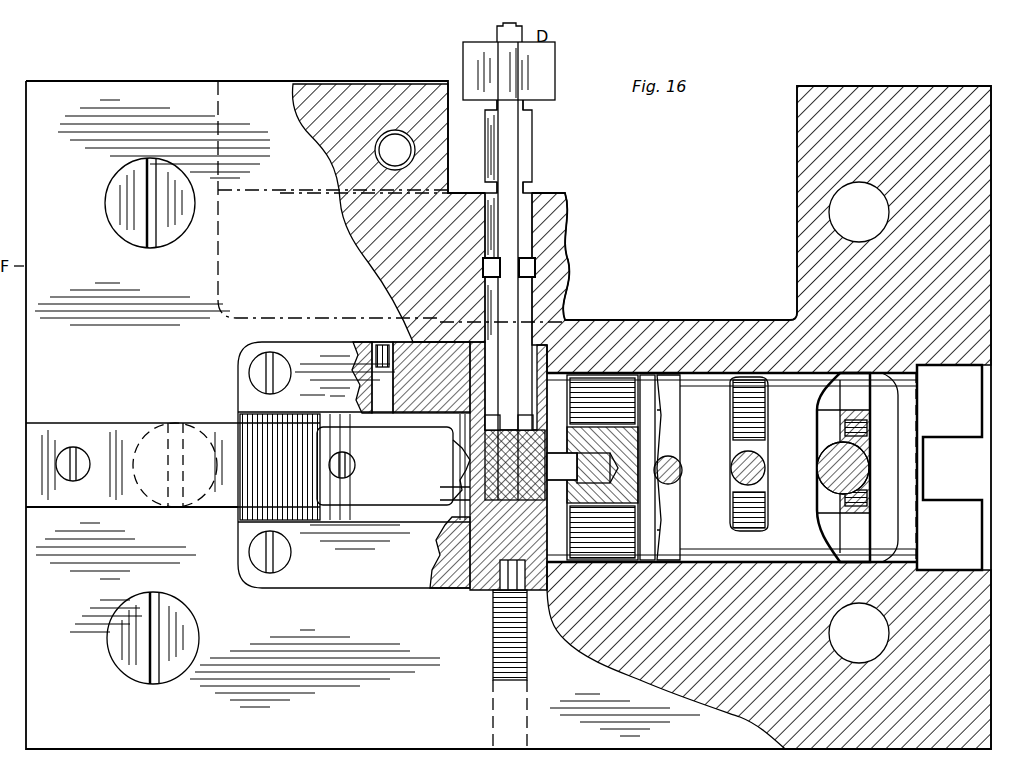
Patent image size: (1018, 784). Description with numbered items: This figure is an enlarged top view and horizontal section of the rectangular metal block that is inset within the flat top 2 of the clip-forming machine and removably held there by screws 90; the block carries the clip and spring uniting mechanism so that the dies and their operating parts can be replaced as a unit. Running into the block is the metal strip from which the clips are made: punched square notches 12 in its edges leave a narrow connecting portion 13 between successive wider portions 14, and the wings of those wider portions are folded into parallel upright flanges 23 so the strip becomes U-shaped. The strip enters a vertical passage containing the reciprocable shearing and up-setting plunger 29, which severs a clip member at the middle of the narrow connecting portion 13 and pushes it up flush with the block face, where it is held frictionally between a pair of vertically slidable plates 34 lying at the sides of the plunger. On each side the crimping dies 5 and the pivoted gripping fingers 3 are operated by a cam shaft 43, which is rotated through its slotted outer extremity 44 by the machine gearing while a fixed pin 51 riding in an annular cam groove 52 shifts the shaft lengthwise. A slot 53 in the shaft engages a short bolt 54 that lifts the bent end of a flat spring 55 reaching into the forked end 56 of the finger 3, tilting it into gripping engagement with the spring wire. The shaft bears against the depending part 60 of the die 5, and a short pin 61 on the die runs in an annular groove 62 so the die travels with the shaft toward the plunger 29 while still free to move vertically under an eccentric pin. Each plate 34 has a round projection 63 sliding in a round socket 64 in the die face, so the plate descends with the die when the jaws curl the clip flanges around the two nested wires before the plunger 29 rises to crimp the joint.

The flat top 2 is at (508, 415).
The gripping or holding fingers 3 is at (440, 415).
The crimping dies 5 is at (393, 466).
The square notches 12 is at (575, 262).
The narrow connecting portion 13 is at (524, 110).
The wider portions 14 is at (548, 70).
The upright flanges 23 is at (485, 149).
The shearing and up-setting plunger 29 is at (505, 430).
The vertically slidable plates 34 is at (440, 492).
The cam shafts 43 is at (732, 467).
The slotted outer extremity 44 is at (955, 437).
The fixed pin 51 is at (866, 468).
The annular cam groove 52 is at (866, 445).
The slot 53 is at (758, 437).
The short bolt 54 is at (764, 470).
The flat spring 55 is at (210, 425).
The forked end 56 is at (320, 522).
The depending part 60 is at (602, 340).
The short pin 61 is at (680, 468).
The annular groove 62 is at (680, 498).
The round projection 63 is at (562, 466).
The round socket 64 is at (600, 462).
The screws 90 is at (108, 207).